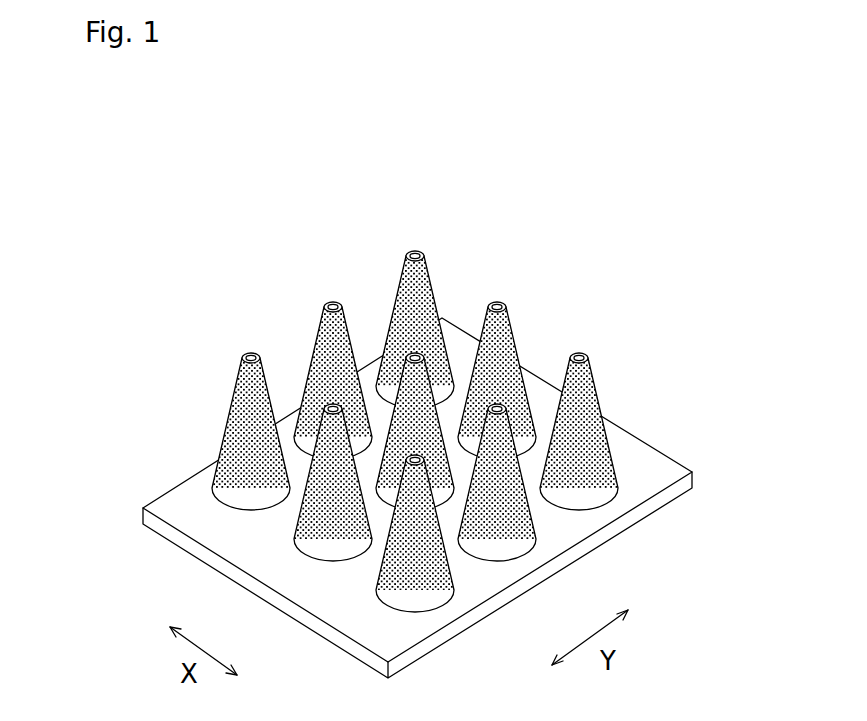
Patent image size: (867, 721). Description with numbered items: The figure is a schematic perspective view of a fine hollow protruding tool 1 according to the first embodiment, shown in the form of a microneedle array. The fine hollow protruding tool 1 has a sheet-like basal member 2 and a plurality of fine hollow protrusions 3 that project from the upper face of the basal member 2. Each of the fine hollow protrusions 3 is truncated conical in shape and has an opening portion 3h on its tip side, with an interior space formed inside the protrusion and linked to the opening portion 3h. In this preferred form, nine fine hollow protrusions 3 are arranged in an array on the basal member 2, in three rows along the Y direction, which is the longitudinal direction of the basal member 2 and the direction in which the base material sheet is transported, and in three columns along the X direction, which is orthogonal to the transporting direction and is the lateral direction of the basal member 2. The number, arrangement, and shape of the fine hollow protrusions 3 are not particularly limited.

The fine hollow protruding tool 1 is at (452, 369).
The basal member 2 is at (643, 468).
The fine hollow protrusions 3 is at (437, 420).
The opening portion 3h is at (333, 303).